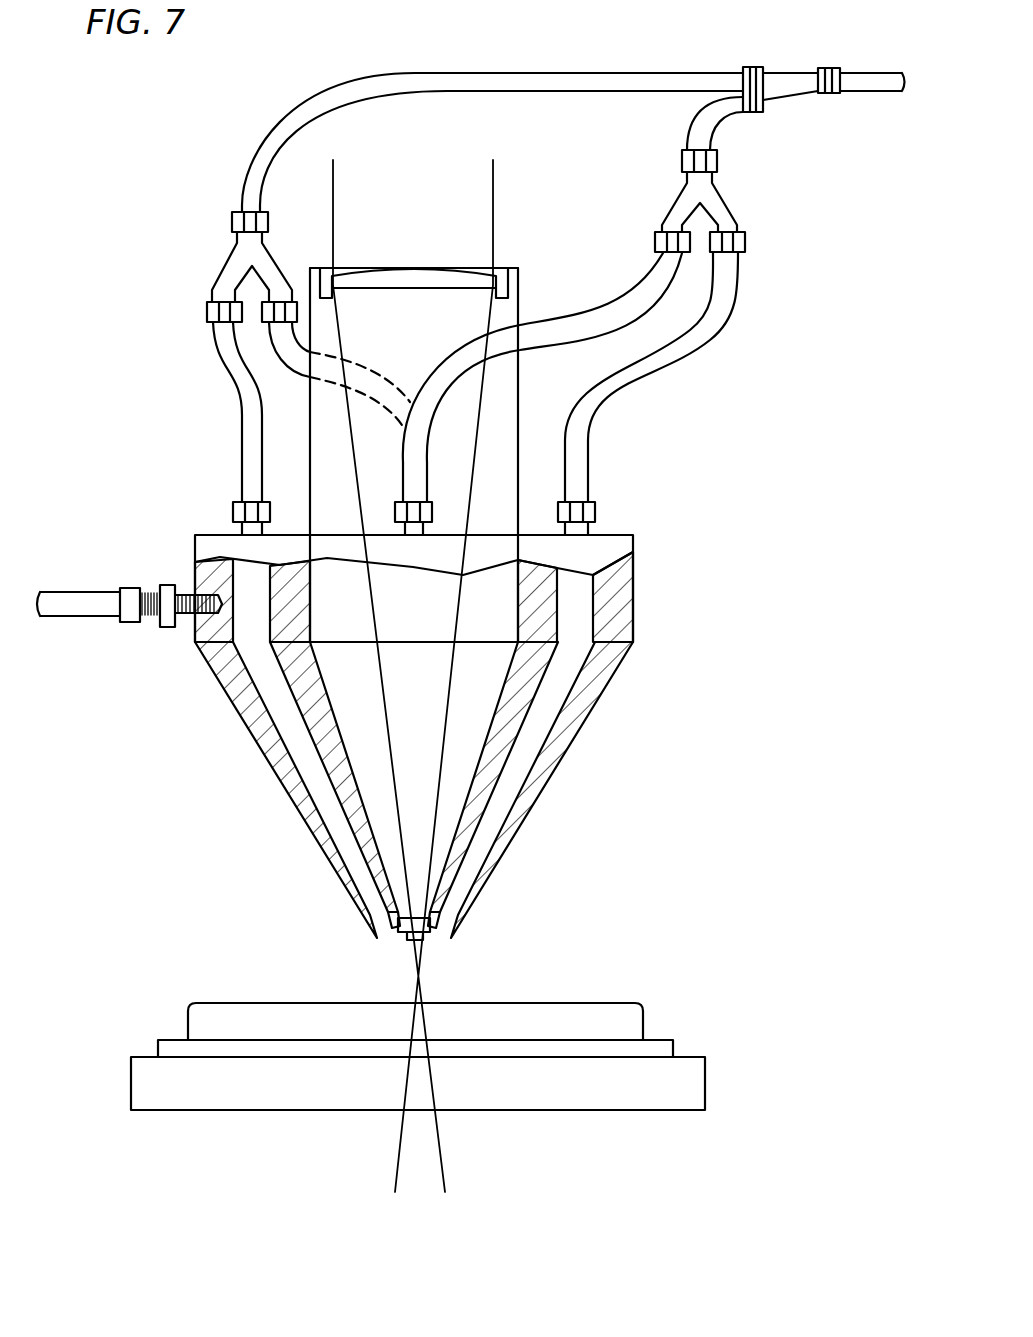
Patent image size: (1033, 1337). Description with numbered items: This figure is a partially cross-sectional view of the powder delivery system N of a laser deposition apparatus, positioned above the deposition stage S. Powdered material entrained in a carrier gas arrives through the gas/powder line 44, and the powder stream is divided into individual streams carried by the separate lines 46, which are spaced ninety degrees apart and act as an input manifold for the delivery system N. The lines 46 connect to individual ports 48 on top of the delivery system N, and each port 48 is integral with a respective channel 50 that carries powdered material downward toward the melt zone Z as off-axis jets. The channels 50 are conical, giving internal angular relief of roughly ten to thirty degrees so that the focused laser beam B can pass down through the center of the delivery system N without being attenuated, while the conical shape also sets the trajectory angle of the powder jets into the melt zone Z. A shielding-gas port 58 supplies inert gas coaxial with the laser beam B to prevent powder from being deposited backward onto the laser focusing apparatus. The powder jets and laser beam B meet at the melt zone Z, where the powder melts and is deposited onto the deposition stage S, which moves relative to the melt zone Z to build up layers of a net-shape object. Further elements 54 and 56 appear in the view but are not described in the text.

The gas/powder line 44 is at (855, 82).
The lines 46 is at (290, 350).
The ports 48 is at (618, 532).
The channels 50 is at (577, 622).
The fitting 54 is at (162, 597).
The lens 56 is at (405, 275).
The shielding-gas port 58 is at (460, 937).
The delivery system N is at (560, 777).
The laser beam B is at (423, 725).
The melt zone Z is at (430, 968).
The deposition stage S is at (549, 1093).